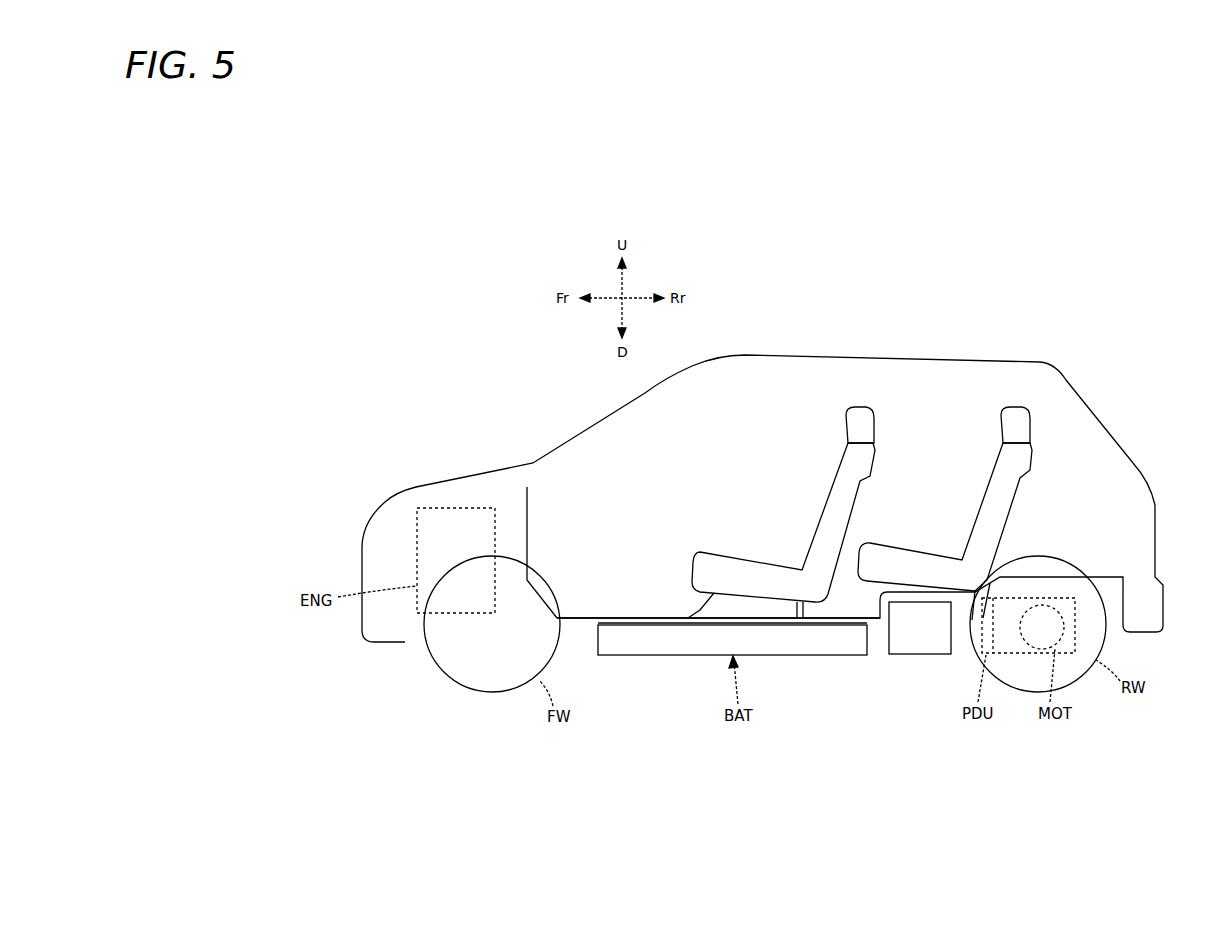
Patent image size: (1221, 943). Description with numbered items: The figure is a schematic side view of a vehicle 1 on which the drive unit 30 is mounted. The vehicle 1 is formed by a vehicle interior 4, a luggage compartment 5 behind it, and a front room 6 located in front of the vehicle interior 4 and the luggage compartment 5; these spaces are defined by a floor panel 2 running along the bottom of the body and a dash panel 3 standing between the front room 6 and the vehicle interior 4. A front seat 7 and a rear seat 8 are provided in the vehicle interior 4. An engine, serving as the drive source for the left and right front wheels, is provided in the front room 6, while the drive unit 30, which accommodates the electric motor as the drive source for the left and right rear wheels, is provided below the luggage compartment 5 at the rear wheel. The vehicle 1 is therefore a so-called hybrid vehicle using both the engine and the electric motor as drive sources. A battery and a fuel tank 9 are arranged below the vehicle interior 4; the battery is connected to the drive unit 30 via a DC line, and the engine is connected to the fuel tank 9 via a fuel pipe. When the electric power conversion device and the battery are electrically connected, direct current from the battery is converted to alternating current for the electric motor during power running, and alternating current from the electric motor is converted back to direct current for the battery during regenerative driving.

The vehicle 1 is at (539, 366).
The floor panel 2 is at (598, 618).
The dash panel 3 is at (530, 517).
The vehicle interior 4 is at (678, 469).
The luggage compartment 5 is at (1092, 479).
The front room 6 is at (396, 556).
The front seat 7 is at (829, 497).
The rear seat 8 is at (991, 494).
The fuel tank 9 is at (917, 660).
The drive unit 30 is at (1075, 607).